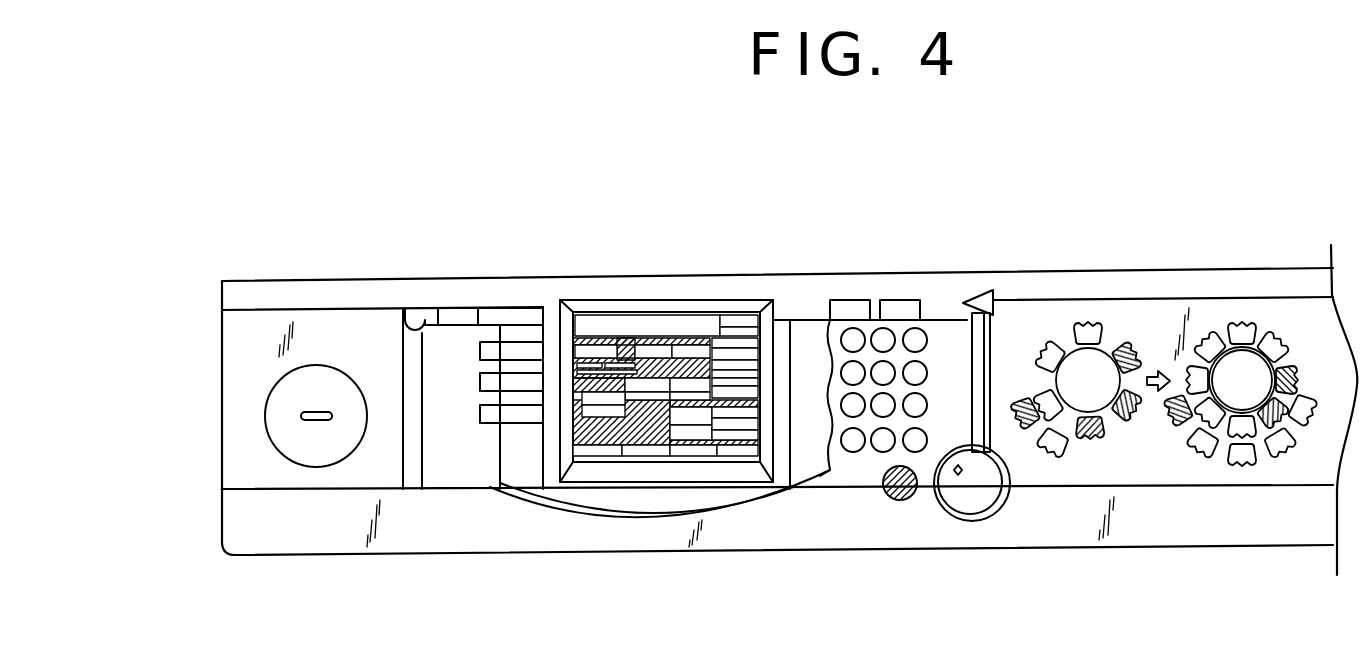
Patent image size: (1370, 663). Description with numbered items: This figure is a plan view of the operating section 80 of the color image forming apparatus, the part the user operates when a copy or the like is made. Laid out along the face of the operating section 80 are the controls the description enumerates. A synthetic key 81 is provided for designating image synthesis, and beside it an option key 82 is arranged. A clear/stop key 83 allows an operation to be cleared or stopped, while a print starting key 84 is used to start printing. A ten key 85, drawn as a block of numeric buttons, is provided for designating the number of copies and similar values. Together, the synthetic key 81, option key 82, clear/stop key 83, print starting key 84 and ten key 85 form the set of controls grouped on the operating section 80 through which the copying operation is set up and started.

The operating section 80 is at (307, 530).
The synthetic key 81 is at (515, 343).
The option key 82 is at (478, 390).
The clear/stop key 83 is at (888, 503).
The print starting key 84 is at (967, 507).
The ten key 85 is at (938, 443).